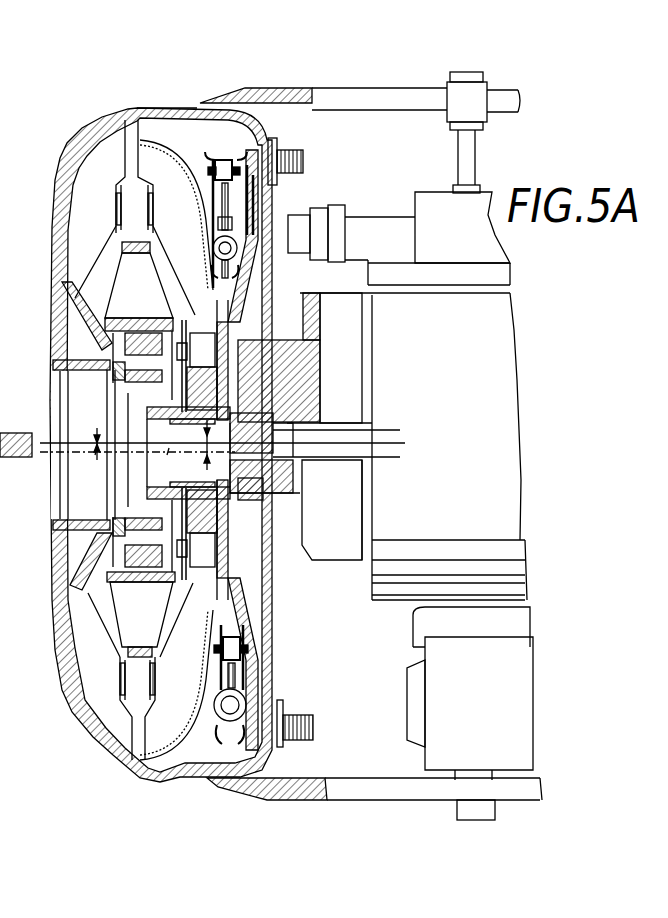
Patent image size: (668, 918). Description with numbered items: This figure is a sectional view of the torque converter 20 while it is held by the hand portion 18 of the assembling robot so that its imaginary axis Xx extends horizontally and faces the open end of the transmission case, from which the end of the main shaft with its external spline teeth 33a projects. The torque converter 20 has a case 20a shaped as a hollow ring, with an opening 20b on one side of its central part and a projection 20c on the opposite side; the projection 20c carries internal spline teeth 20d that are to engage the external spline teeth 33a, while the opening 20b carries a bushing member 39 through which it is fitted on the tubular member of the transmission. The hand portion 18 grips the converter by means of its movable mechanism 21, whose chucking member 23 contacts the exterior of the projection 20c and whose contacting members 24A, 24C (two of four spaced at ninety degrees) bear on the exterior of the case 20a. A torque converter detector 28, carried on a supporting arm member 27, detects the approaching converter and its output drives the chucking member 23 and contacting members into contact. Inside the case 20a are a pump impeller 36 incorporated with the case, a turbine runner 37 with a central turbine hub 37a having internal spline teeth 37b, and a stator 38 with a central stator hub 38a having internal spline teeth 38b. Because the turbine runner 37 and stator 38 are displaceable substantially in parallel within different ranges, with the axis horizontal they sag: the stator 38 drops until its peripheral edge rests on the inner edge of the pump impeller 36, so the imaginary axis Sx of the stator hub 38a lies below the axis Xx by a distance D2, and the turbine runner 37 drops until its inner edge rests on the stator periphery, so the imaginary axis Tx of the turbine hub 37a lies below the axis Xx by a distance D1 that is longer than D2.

The torque converter 20 is at (86, 133).
The case 20a is at (143, 107).
The opening 20b is at (57, 368).
The projection 20c is at (297, 482).
The internal spline teeth 20d is at (300, 408).
The hand portion 18 is at (236, 93).
The contacting member 24A is at (356, 90).
The contacting member 24C is at (357, 782).
The movable mechanism 21 is at (413, 86).
The supporting arm member 27 is at (385, 252).
The torque converter detector 28 is at (300, 215).
The chucking member 23 is at (283, 340).
The pump impeller 36 is at (88, 187).
The turbine runner 37 is at (157, 158).
The turbine hub 37a is at (250, 383).
The internal spline teeth 37b is at (232, 512).
The stator 38 is at (120, 290).
The stator hub 38a is at (120, 393).
The internal spline teeth 38b is at (125, 411).
The bushing member 39 is at (62, 498).
The external spline teeth 33a is at (20, 460).
The distance D1 is at (194, 455).
The distance D2 is at (88, 436).
The imaginary axis Sx is at (95, 455).
The imaginary axis Tx is at (167, 455).
The imaginary axis Xx is at (385, 447).